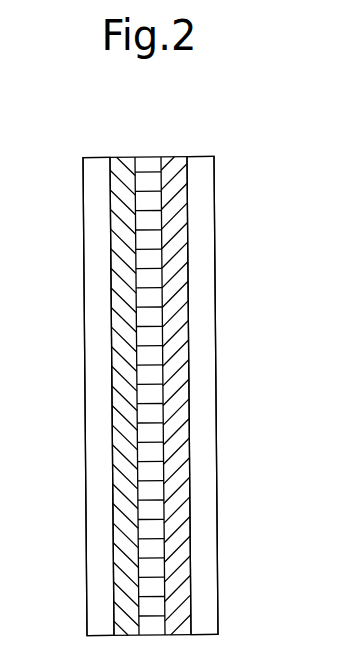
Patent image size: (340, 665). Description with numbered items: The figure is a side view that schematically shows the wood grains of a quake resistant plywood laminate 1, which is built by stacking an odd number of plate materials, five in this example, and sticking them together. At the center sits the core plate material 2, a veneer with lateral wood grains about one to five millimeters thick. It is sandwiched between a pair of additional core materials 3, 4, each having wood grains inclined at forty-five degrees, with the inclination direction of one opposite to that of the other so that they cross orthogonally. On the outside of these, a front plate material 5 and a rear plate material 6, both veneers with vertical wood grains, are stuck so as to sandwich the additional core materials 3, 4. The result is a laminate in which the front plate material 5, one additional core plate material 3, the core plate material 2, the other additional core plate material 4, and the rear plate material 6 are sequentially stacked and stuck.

The quake resistant plywood laminate 1 is at (258, 164).
The core plate material 2 is at (150, 182).
The additional core material 3 is at (123, 442).
The additional core material 4 is at (177, 462).
The front plate material 5 is at (90, 224).
The rear plate material 6 is at (205, 253).